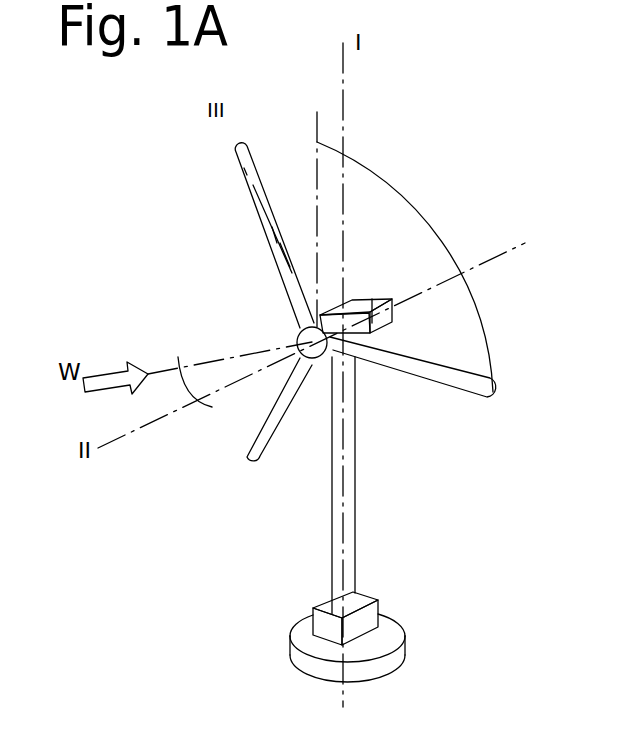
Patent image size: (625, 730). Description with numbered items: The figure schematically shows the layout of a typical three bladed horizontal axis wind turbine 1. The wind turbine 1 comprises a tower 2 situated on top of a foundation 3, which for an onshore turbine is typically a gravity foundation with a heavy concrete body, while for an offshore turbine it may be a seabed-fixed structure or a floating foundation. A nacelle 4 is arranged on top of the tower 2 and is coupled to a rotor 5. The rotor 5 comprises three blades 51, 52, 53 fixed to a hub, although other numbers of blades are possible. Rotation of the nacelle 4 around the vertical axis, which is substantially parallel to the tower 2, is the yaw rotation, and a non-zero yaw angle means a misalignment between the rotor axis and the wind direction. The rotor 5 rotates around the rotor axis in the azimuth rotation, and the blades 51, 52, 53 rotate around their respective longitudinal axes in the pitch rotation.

The wind turbine 1 is at (441, 180).
The tower 2 is at (348, 502).
The foundation 3 is at (384, 637).
The nacelle 4 is at (352, 300).
The rotor 5 is at (295, 208).
The first blade 51 is at (262, 222).
The second blade 52 is at (446, 377).
The third blade 53 is at (256, 460).